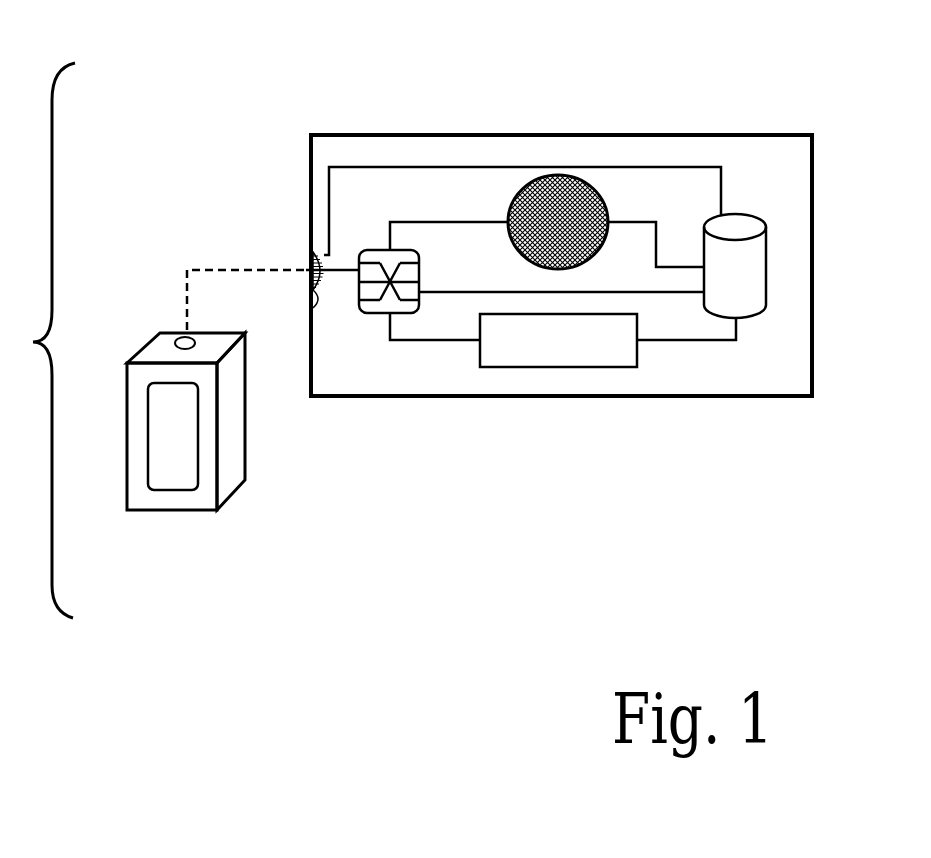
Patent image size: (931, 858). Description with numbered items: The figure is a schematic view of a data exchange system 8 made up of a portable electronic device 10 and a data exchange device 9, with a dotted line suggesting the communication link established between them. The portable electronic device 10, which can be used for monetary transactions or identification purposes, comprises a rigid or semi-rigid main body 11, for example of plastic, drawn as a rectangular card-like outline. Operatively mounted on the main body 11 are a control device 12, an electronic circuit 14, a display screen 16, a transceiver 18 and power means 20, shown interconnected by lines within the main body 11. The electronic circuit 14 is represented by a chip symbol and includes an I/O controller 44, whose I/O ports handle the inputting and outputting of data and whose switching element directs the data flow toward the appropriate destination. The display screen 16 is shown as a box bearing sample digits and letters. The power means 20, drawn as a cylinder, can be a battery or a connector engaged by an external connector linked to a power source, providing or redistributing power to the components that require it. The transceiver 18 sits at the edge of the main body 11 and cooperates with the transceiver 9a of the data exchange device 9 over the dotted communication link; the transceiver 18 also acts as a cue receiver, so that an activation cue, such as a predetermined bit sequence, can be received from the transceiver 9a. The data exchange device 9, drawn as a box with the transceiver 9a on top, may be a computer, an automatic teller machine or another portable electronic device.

The data exchange system 8 is at (41, 340).
The data exchange device 9 is at (208, 398).
The transceiver 9a is at (180, 337).
The portable electronic device 10 is at (296, 118).
The main body 11 is at (487, 397).
The control device 12 is at (587, 228).
The electronic circuit 14 is at (372, 271).
The display screen 16 is at (590, 358).
The transceiver 18 is at (317, 292).
The power means 20 is at (766, 258).
The I/O controller 44 is at (387, 313).